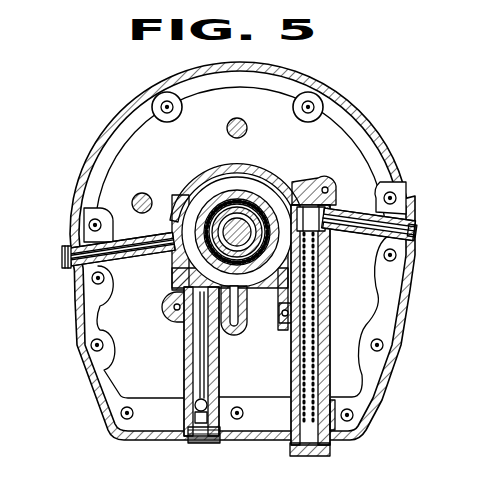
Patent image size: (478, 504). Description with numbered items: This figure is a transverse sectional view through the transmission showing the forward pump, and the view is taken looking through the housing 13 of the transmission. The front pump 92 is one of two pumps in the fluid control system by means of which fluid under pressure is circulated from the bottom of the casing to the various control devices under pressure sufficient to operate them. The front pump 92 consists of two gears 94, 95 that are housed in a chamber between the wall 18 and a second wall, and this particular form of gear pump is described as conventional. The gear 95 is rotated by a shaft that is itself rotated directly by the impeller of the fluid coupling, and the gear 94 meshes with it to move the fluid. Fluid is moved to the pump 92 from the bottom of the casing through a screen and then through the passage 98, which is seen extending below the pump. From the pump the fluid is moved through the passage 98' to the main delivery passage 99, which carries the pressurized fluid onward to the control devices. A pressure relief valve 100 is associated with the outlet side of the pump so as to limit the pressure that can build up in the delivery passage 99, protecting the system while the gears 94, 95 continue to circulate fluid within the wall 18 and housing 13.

The housing 13 is at (379, 139).
The wall 18 is at (327, 292).
The front pump 92 is at (280, 183).
The gear 94 is at (203, 172).
The gear 95 is at (243, 168).
The passage 98 is at (187, 365).
The passage 98' is at (357, 211).
The main delivery passage 99 is at (368, 233).
The pressure relief valve 100 is at (309, 202).